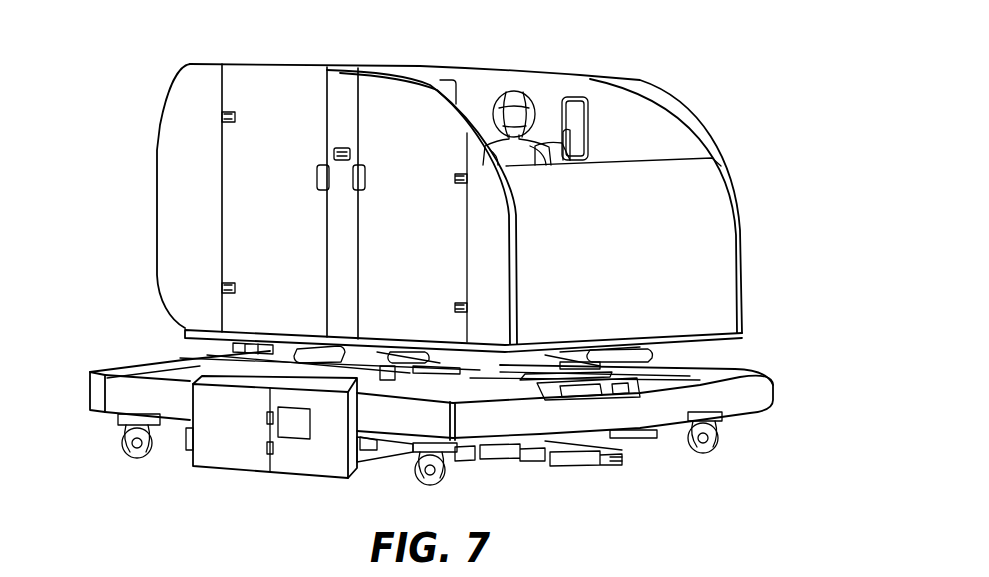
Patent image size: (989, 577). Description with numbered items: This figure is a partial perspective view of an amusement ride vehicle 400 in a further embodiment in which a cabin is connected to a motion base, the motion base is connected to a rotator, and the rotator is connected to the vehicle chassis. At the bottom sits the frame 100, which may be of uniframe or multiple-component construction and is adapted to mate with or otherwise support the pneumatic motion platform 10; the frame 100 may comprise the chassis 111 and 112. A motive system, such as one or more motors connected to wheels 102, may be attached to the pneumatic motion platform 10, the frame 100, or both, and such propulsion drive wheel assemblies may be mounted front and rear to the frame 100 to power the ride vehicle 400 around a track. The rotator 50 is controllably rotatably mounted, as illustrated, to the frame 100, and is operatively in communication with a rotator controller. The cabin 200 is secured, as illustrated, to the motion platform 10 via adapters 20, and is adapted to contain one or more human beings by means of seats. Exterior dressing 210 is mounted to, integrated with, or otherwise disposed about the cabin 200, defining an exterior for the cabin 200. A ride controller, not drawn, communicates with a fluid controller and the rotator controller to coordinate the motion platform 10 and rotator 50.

The amusement ride vehicle 400 is at (78, 82).
The cabin 200 is at (707, 105).
The exterior dressing 210 is at (180, 188).
The actuator 20 is at (247, 360).
The frame 100 is at (247, 475).
The chassis 112 is at (703, 367).
The pneumatic motion platform 10 is at (322, 378).
The rotator 50 is at (350, 402).
The chassis 111 is at (123, 398).
The wheels 102 is at (448, 473).